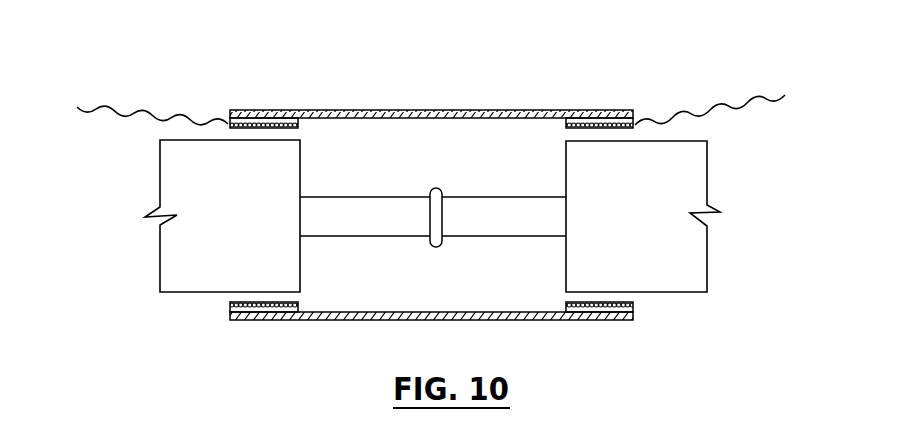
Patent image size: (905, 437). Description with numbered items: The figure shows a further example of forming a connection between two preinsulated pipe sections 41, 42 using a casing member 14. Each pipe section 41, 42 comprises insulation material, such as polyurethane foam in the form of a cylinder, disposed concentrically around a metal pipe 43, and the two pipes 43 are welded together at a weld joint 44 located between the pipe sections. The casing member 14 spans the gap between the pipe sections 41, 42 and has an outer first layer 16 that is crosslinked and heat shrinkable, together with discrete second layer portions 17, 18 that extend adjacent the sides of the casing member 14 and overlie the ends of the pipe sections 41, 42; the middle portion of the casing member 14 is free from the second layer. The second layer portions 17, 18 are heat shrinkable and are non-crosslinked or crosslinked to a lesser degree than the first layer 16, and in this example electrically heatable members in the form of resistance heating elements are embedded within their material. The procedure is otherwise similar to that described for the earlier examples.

The casing member 14 is at (446, 166).
The outer first layer 16 is at (372, 110).
The second layer portion 17 is at (272, 122).
The second layer portion 18 is at (612, 120).
The preinsulated pipe section 41 is at (197, 275).
The preinsulated pipe section 42 is at (658, 273).
The pipe 43 is at (374, 206).
The weld joint 44 is at (438, 201).